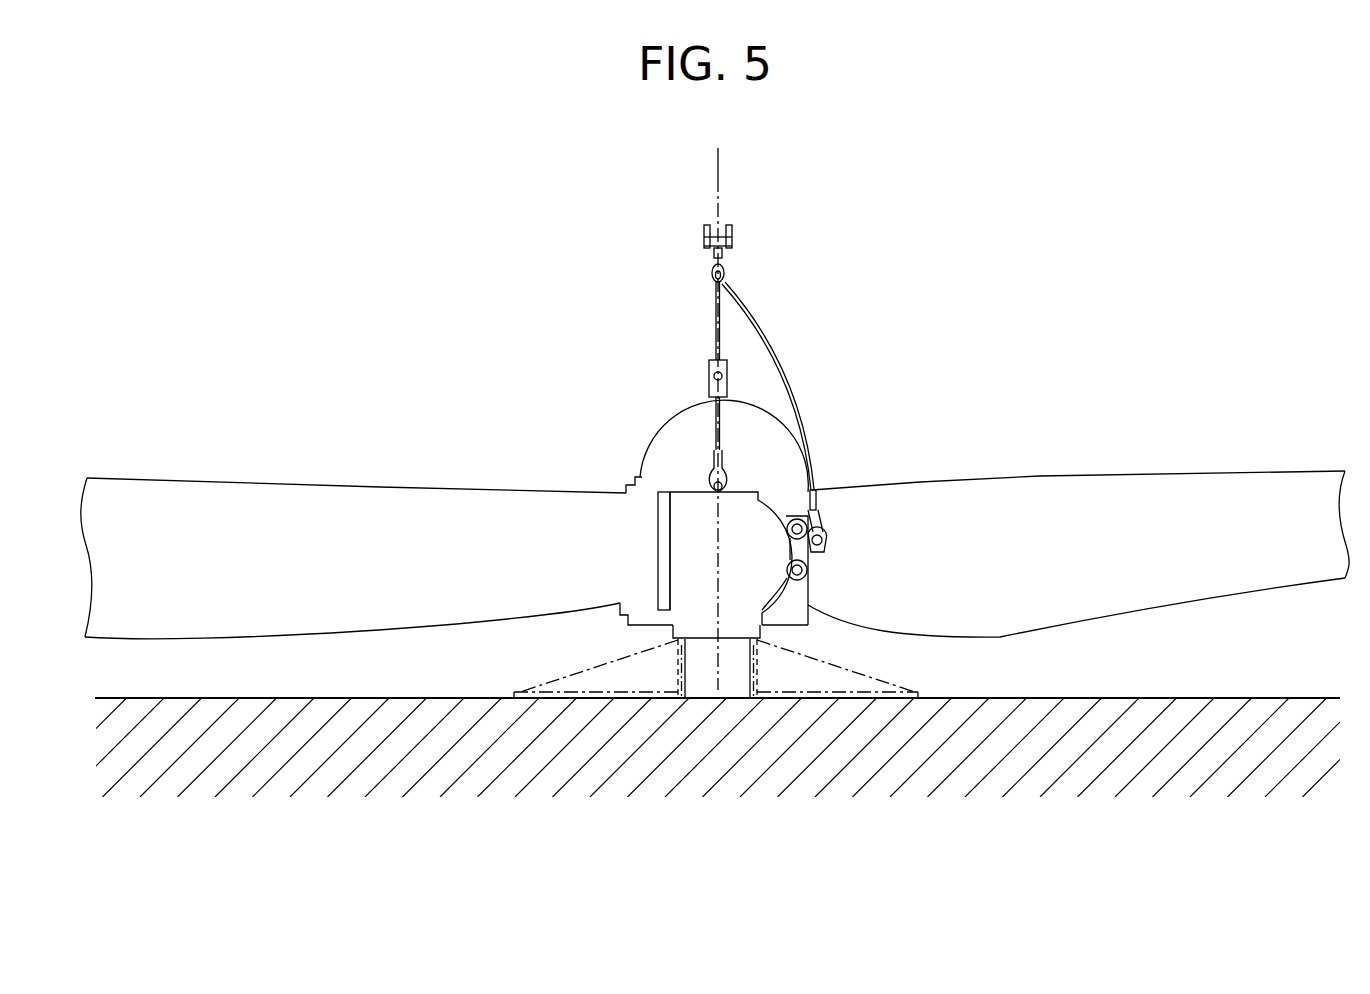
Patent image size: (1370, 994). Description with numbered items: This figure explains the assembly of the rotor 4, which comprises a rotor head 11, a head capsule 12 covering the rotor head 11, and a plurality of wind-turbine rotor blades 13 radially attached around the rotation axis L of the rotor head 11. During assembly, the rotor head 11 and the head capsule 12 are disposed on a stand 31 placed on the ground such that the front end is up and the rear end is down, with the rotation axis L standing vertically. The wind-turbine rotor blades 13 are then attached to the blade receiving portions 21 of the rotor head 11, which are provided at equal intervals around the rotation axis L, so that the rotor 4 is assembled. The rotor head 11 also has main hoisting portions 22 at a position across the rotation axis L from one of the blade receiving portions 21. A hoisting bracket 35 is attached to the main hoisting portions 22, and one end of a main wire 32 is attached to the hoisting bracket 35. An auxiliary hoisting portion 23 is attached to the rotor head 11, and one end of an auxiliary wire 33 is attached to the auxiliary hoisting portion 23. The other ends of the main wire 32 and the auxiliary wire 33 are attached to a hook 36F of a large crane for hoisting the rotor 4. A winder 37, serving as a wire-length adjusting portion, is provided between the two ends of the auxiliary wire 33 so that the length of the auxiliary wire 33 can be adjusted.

The rotor 4 is at (526, 296).
The rotor head 11 is at (648, 474).
The head capsule 12 is at (638, 474).
The wind-turbine rotor blades 13 is at (338, 494).
The blade receiving portions 21 is at (660, 554).
The main hoisting portions 22 is at (787, 513).
The auxiliary hoisting portion 23 is at (711, 481).
The stand 31 is at (672, 668).
The main wire 32 is at (781, 368).
The auxiliary wire 33 is at (716, 320).
The hoisting bracket 35 is at (813, 552).
The hook 36F is at (733, 239).
The winder 37 is at (708, 375).
The rotation axis L is at (716, 175).